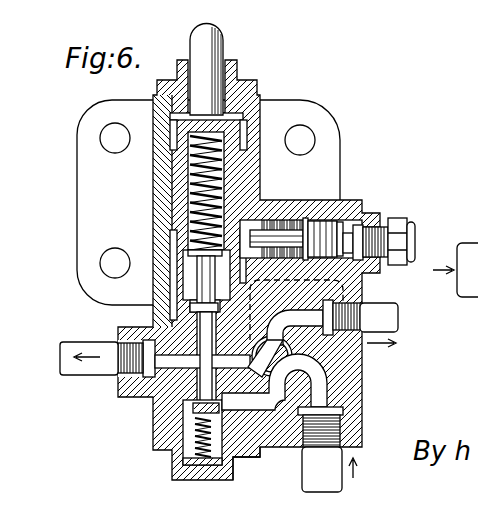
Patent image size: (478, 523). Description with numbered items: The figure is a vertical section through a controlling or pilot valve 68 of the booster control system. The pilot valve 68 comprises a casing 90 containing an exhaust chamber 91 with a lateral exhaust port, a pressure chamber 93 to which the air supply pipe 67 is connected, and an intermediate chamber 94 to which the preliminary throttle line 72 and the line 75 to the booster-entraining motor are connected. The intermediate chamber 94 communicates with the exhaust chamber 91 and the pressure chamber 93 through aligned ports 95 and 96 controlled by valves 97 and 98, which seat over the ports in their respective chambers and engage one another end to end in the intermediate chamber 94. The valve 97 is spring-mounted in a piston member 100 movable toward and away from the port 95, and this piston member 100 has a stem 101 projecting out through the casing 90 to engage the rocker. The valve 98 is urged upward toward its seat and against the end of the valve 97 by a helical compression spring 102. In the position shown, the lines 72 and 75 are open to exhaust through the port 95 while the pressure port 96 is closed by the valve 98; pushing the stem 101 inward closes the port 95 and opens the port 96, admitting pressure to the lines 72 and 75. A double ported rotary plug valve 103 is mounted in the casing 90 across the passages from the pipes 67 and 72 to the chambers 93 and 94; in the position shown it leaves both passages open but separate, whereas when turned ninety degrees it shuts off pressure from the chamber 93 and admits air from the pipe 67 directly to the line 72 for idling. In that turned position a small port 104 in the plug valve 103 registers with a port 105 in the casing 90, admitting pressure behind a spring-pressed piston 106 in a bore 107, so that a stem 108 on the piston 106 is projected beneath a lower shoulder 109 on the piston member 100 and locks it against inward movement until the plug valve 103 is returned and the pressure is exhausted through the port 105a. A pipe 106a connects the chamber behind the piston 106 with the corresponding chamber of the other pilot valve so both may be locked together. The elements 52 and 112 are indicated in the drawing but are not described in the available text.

The conduit 52 is at (466, 246).
The air supply pipe 67 is at (339, 449).
The pilot valve 68 is at (190, 202).
The preliminary throttle line 72 is at (400, 323).
The line to the booster-entraining motor 75 is at (70, 345).
The casing 90 is at (262, 118).
The exhaust chamber 91 is at (180, 288).
The pressure chamber 93 is at (271, 449).
The intermediate chamber 94 is at (148, 397).
The exhaust port 95 is at (187, 336).
The pressure port 96 is at (184, 425).
The exhaust valve 97 is at (200, 273).
The pressure valve 98 is at (183, 438).
The piston member 100 is at (180, 171).
The stem 101 is at (212, 44).
The helical compression spring 102 is at (219, 421).
The double ported rotary plug valve 103 is at (285, 343).
The small port 104 is at (202, 357).
The port 105 is at (362, 288).
The exhaust port 105a is at (293, 363).
The spring-pressed piston 106 is at (369, 217).
The pipe 106a is at (409, 232).
The chamber or bore 107 is at (310, 214).
The stem 108 is at (268, 232).
The lower shoulder 109 is at (244, 240).
The conduit 112 is at (471, 182).